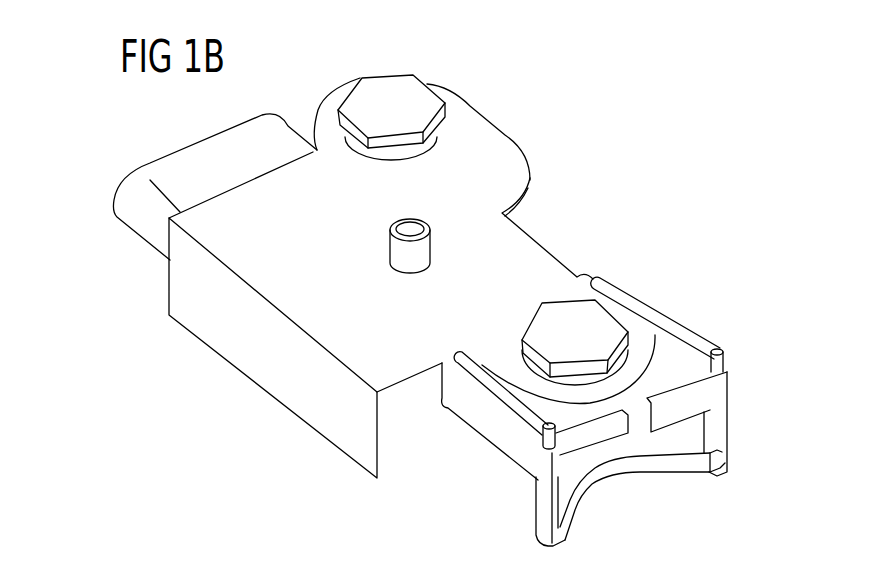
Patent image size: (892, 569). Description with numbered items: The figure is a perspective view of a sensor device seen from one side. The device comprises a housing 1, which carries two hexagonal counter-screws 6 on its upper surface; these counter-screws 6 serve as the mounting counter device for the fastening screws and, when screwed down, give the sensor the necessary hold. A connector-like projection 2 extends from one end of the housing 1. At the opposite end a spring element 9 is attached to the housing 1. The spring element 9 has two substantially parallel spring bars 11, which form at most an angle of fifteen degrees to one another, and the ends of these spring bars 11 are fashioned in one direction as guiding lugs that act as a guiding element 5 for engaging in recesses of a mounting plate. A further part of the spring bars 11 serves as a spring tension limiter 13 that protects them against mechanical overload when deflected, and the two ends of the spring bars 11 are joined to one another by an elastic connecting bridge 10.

The housing 1 is at (230, 338).
The connector 2 is at (132, 197).
The guiding element 5 is at (400, 251).
The counter-screws 6 is at (353, 100).
The spring element 9 is at (536, 508).
The elastic connecting bridge 10 is at (643, 468).
The spring bars 11 is at (653, 313).
The spring tension limiter 13 is at (705, 430).